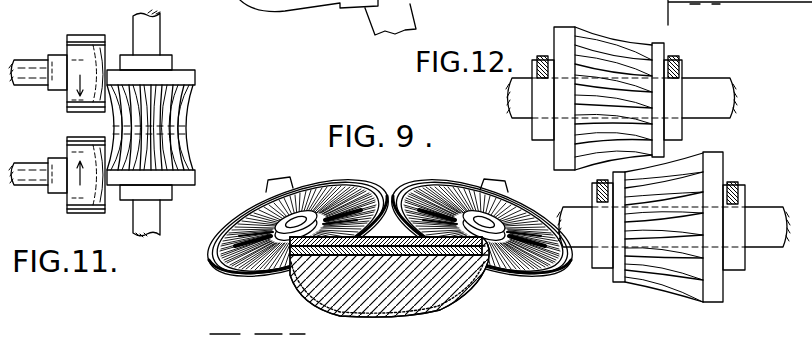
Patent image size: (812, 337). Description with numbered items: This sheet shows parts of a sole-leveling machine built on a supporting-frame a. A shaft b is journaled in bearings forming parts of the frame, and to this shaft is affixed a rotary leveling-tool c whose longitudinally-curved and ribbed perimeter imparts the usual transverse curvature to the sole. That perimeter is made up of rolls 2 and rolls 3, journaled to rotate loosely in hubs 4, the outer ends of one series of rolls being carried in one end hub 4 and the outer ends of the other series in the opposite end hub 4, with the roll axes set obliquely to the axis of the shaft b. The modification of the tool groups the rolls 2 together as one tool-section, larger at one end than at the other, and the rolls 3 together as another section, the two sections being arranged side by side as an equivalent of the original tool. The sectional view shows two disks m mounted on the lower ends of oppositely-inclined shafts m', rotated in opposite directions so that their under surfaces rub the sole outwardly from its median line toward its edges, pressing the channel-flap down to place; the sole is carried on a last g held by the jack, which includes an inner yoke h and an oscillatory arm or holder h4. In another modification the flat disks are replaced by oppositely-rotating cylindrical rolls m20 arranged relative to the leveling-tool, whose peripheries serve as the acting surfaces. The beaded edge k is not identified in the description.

In FIG. 9, the disk m is at (390, 244).
In FIG. 9, the inclined shaft m' is at (377, 173).
In FIG. 11, the cylindrical roll m20 is at (80, 228).
In FIG. 11, the rotary leveling-tool c is at (158, 123).
In FIG. 9, the supporting-frame a is at (386, 237).
In FIG. 9, the last g is at (325, 278).
In FIG. 9, the beaded edge k is at (420, 332).
In FIG. 12, the roll 2 is at (684, 171).
In FIG. 12, the roll 3 is at (587, 41).
In FIG. 12, the end hub 4 is at (560, 31).
In FIG. 12, the shaft b is at (708, 96).
In FIG. 12, the oscillatory arm or holder h4 is at (414, 12).
In FIG. 12, the inner yoke h is at (716, 12).